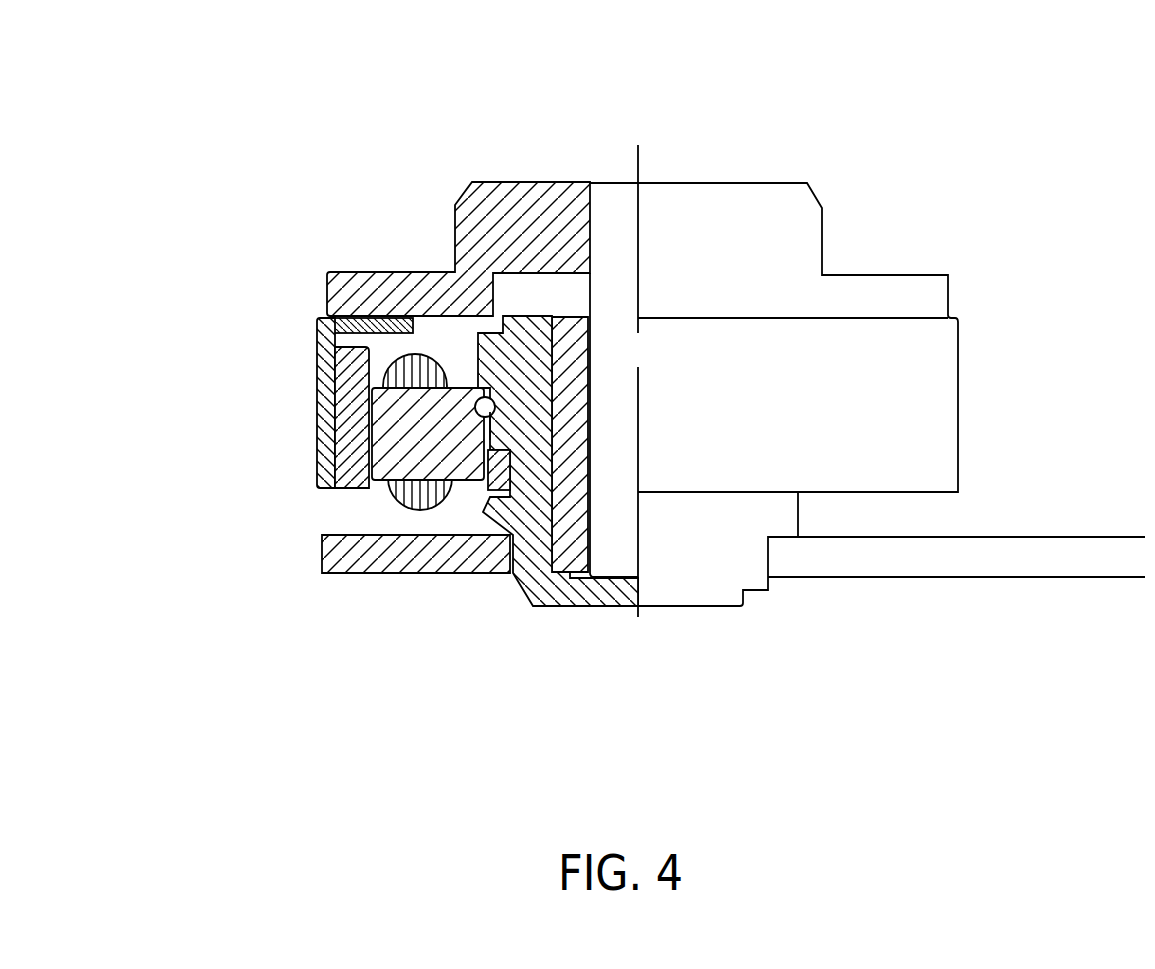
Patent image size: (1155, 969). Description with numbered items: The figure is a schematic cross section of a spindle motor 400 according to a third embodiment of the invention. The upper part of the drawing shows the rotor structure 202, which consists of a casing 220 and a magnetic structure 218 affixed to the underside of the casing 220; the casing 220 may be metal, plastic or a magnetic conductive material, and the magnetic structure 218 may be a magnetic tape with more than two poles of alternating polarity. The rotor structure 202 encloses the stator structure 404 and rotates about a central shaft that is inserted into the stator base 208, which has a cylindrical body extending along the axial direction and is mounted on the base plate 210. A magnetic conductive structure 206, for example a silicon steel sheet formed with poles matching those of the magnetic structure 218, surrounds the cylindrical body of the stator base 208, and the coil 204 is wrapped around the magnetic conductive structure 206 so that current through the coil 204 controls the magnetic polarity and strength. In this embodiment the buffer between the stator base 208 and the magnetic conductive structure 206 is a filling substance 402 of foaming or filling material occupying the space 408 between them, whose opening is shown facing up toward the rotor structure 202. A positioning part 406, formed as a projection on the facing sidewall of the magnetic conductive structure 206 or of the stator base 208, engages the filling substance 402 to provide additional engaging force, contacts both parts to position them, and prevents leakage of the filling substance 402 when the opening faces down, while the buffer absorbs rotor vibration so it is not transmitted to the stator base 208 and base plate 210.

The spindle motor 400 is at (143, 51).
The rotor structure 202 is at (440, 152).
The magnetic structure 218 is at (343, 372).
The casing 220 is at (410, 293).
The stator structure 404 is at (572, 672).
The coil 204 is at (420, 493).
The magnetic conductive structure 206 is at (382, 457).
The filling substance 402 is at (485, 510).
The stator base 208 is at (520, 507).
The positioning part 406 is at (493, 400).
The space 408 is at (489, 426).
The base plate 210 is at (975, 557).